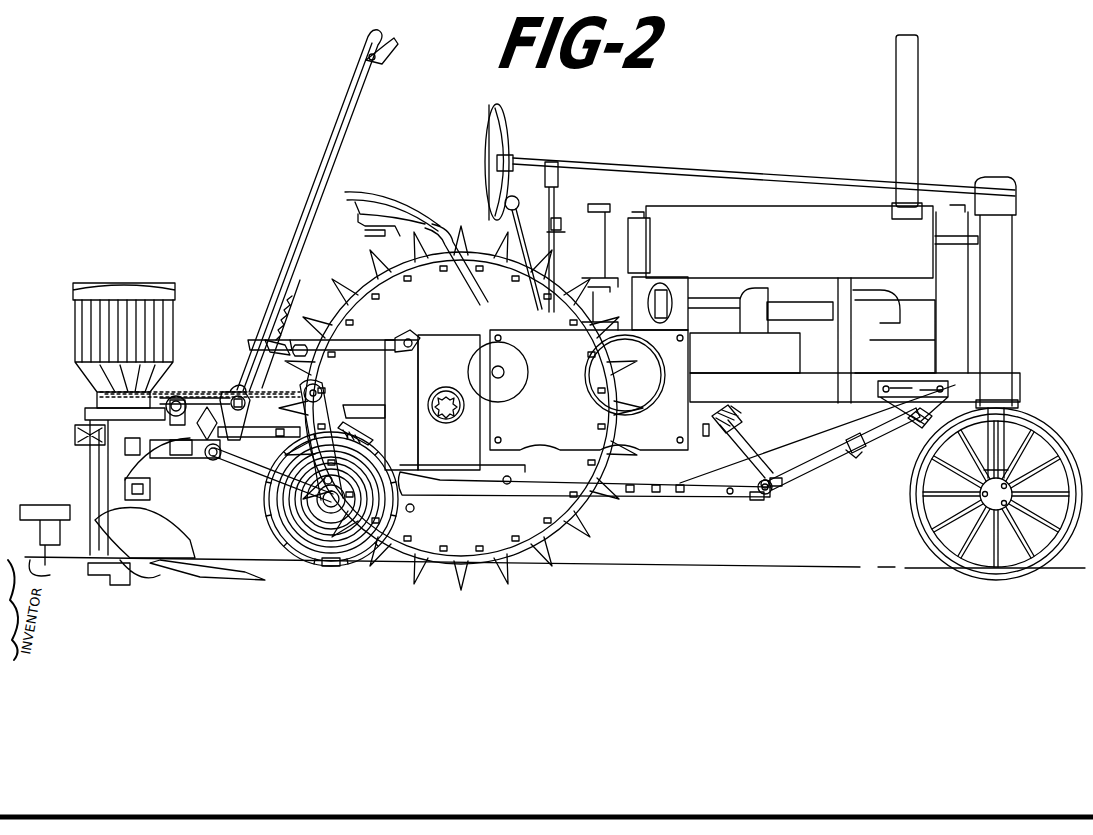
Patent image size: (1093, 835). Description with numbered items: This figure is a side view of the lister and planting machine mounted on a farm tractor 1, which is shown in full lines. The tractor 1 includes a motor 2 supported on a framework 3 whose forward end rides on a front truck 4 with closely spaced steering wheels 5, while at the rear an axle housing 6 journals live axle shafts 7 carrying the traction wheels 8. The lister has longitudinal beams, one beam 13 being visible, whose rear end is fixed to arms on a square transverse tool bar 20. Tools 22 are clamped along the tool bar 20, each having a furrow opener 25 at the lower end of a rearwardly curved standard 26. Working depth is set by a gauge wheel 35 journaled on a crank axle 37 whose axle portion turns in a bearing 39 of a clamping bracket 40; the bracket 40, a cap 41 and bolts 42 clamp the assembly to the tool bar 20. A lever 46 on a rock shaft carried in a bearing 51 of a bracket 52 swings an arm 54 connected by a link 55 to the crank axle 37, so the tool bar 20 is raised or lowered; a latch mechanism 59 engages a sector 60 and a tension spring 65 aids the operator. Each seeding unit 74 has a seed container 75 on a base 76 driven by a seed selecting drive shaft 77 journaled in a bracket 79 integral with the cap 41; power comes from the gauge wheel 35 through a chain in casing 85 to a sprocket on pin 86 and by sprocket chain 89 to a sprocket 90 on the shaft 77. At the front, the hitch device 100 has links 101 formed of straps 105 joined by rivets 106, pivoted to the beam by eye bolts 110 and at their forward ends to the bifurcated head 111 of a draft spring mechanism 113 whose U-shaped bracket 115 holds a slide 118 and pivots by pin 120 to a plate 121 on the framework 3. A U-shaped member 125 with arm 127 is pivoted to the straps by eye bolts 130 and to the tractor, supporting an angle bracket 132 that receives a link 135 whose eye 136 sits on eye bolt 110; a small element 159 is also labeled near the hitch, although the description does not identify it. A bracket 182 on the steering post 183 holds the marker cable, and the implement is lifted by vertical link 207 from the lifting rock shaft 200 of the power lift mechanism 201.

The tractor 1 is at (779, 165).
The motor 2 is at (708, 352).
The framework 3 is at (855, 380).
The front truck 4 is at (1014, 402).
The front steering wheels 5 is at (1038, 428).
The axle housing 6 is at (433, 346).
The live axle shafts 7 is at (445, 399).
The traction wheels 8 is at (410, 512).
The longitudinally extending beam 13 is at (541, 518).
The transverse tool bar 20 is at (190, 420).
The tool 22 is at (150, 570).
The furrow opener 25 is at (170, 536).
The standard 26 is at (150, 482).
The gauge wheel 35 is at (322, 565).
The crank axle 37 is at (258, 476).
The bearing 39 is at (216, 460).
The clamping bracket 40 is at (238, 400).
The cap 41 is at (181, 452).
The bolt 42 is at (150, 474).
The lever 46 is at (312, 203).
The bearing 51 is at (238, 392).
The bracket 52 is at (230, 442).
The arm 54 is at (337, 395).
The link 55 is at (332, 410).
The latch mechanism 59 is at (275, 340).
The sector 60 is at (250, 343).
The tension spring 65 is at (350, 425).
The seeding unit 74 is at (84, 270).
The seed container 75 is at (78, 322).
The base 76 is at (90, 418).
The seed selecting drive shaft 77 is at (177, 400).
The bracket 79 is at (150, 440).
The casing 85 is at (272, 507).
The pin 86 is at (317, 389).
The sprocket chain 89 is at (205, 390).
The sprocket 90 is at (210, 394).
The hitch device 100 is at (771, 492).
The link 101 is at (730, 498).
The strap 105 is at (706, 486).
The rivet 106 is at (684, 493).
The eye bolt 110 is at (629, 493).
The bifurcated head 111 is at (776, 479).
The resilient draft transmitting spring mechanism 113 is at (855, 463).
The U-shaped bracket 115 is at (820, 462).
The slide 118 is at (856, 447).
The pin 120 is at (913, 425).
The plate 121 is at (905, 398).
The U-shaped member 125 is at (757, 500).
The arm 127 is at (745, 450).
The eye bolt 130 is at (764, 479).
The angle bracket 132 is at (722, 414).
The link 135 is at (700, 461).
The eye 136 is at (657, 493).
The stud 159 is at (703, 430).
The bracket 182 is at (561, 222).
The steering post 183 is at (556, 186).
The lifting rock shaft 200 is at (393, 345).
The power lift mechanism 201 is at (404, 394).
The vertical link 207 is at (305, 345).